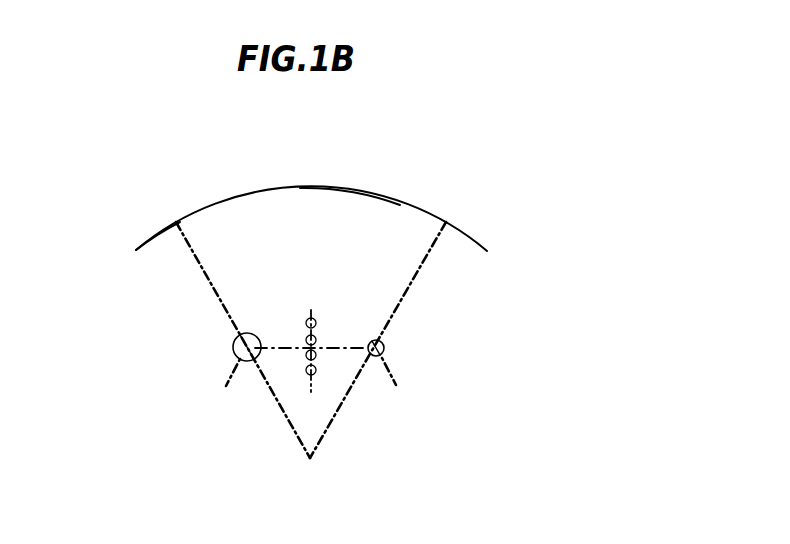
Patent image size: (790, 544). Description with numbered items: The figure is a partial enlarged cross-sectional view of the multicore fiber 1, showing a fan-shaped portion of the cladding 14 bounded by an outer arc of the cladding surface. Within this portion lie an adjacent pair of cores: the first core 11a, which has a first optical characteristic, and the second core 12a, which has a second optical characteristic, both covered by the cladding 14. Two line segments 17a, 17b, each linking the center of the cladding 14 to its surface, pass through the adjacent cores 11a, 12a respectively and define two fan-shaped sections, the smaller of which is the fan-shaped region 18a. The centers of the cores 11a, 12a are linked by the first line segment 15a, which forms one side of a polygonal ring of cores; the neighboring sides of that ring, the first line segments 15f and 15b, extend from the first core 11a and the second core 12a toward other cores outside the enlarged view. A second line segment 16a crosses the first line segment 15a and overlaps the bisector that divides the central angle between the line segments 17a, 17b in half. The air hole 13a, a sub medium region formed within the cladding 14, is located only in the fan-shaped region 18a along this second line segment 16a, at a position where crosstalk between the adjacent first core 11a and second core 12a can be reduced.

The multicore fiber 1 is at (453, 191).
The cladding 14 is at (158, 240).
The fan-shaped region 18a is at (348, 200).
The line segment 17a is at (195, 263).
The line segment 17b is at (428, 263).
The air hole 13a is at (310, 318).
The first line segment 15a is at (338, 345).
The second line segment 16a is at (311, 378).
The first core 11a is at (233, 344).
The second core 12a is at (384, 345).
The first line segment 15f is at (227, 378).
The first line segment 15b is at (396, 380).